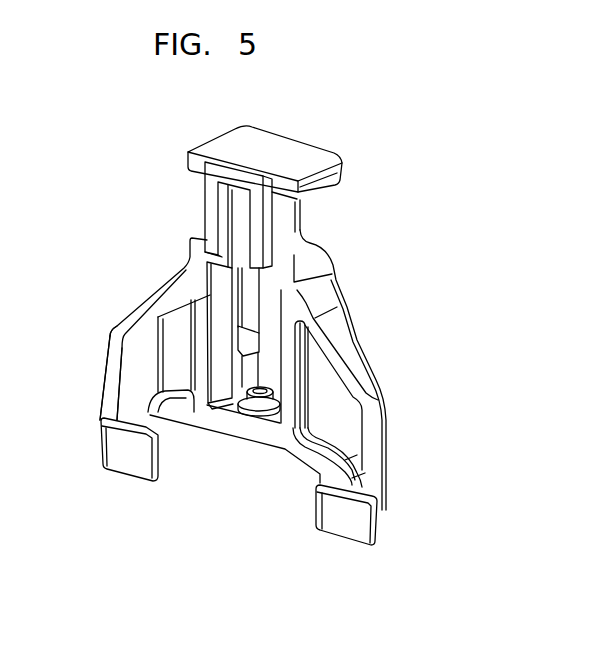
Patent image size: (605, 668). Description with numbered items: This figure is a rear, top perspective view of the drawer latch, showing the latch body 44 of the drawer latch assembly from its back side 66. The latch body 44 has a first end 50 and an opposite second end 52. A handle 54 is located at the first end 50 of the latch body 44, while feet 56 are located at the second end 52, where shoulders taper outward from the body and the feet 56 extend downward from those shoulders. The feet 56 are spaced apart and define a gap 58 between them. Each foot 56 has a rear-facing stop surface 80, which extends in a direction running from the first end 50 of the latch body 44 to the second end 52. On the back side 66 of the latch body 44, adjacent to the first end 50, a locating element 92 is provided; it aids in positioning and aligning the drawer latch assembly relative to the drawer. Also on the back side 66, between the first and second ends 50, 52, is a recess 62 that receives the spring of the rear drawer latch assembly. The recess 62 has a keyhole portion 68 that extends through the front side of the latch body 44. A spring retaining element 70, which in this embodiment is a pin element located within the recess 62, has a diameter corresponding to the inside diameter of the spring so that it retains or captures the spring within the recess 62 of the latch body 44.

The first end 50 is at (320, 136).
The handle 54 is at (318, 159).
The locating element 92 is at (208, 218).
The latch body 44 is at (124, 230).
The recess 62 is at (222, 313).
The back side 66 is at (95, 373).
The keyhole portion 68 is at (247, 299).
The spring retaining element 70 is at (262, 403).
The second end 52 is at (198, 516).
The gap 58 is at (222, 490).
The feet 56 is at (107, 448).
The rear-facing stop surface 80 is at (116, 461).